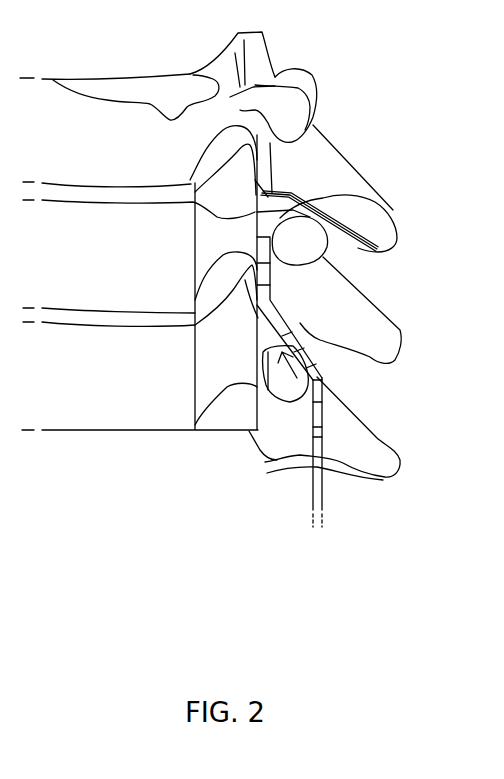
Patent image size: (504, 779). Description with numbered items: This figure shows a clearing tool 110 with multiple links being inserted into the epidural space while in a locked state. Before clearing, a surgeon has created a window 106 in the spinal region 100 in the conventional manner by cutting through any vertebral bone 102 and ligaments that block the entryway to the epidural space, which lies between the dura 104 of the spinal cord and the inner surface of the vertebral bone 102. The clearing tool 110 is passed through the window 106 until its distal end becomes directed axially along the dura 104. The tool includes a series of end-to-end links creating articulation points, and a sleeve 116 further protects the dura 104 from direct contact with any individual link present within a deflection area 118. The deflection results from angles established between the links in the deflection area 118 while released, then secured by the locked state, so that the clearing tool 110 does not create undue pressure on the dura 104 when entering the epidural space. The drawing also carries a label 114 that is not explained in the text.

The spinal region 100 is at (358, 133).
The vertebral bone 102 is at (343, 293).
The dura 104 is at (218, 418).
The window 106 is at (249, 432).
The clearing tool 110 is at (360, 501).
The lamina 114 is at (390, 208).
The sleeve 116 is at (270, 297).
The deflection area 118 is at (284, 305).